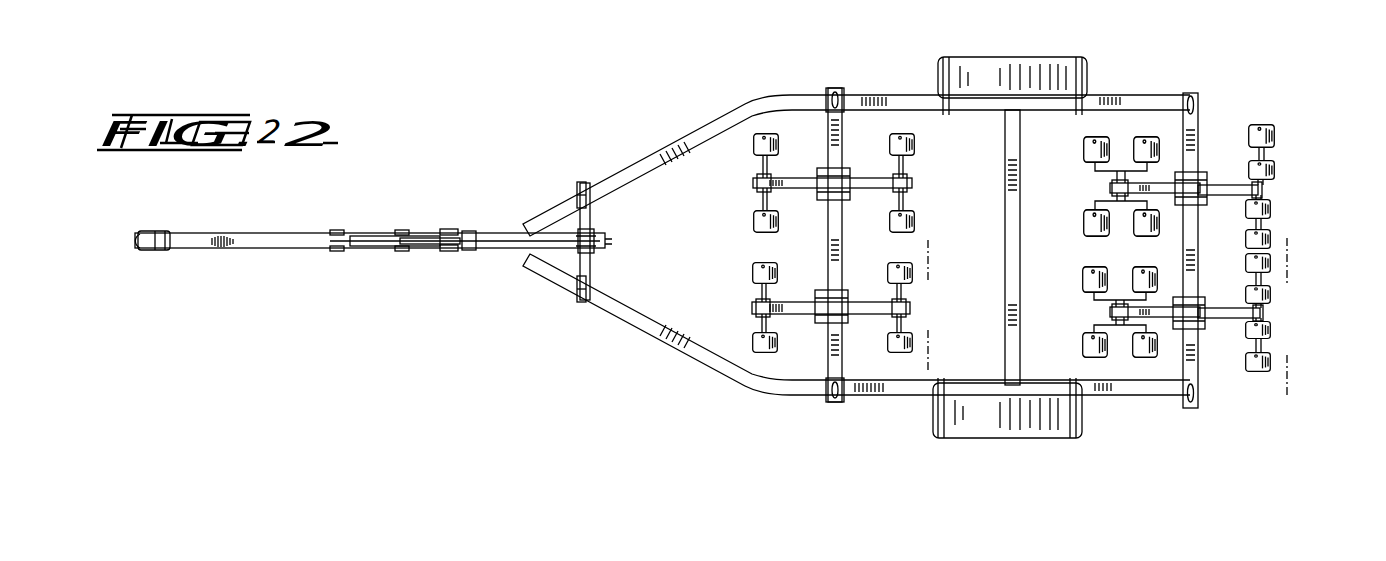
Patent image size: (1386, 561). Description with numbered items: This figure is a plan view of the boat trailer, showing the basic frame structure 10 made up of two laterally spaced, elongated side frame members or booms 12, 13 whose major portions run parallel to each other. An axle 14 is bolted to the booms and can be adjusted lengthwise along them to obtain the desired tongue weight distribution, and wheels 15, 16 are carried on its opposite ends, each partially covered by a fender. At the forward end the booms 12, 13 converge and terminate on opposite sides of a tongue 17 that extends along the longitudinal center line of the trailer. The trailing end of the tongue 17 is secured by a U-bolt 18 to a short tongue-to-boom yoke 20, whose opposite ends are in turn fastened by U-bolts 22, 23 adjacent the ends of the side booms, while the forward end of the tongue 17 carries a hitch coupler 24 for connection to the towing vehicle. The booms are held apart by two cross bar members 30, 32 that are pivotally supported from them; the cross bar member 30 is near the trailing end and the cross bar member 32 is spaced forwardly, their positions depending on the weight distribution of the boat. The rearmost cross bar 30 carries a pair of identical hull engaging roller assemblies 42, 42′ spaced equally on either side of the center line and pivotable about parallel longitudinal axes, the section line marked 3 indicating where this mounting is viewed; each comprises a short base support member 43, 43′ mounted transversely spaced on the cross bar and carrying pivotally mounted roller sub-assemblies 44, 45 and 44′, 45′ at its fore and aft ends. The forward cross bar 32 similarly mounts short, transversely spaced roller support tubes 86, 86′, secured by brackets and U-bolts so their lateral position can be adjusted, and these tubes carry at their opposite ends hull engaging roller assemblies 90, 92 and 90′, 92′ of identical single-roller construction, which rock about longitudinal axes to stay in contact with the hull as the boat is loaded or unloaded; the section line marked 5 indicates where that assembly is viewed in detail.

The basic frame structure 10 is at (856, 233).
The side frame member or boom 12 is at (886, 95).
The side frame member or boom 13 is at (851, 391).
The axle 14 is at (1013, 243).
The wheel 15 is at (1008, 75).
The wheel 16 is at (1012, 418).
The tongue 17 is at (295, 243).
The U-bolt 18 is at (592, 240).
The tongue-to-boom yoke 20 is at (588, 266).
The U-bolt 22 is at (577, 194).
The U-bolt 23 is at (577, 290).
The hitch coupler 24 is at (148, 249).
The cross bar member 30 is at (1190, 238).
The cross bar member 32 is at (843, 256).
The hull engaging roller assembly 42 is at (1240, 372).
The hull engaging roller assembly 42′ is at (1258, 118).
The base support member 43 is at (1226, 319).
The base support member 43′ is at (1230, 187).
The hull engaging roller sub-assembly 44 is at (1081, 337).
The hull engaging roller sub-assembly 44′ is at (1083, 150).
The hull engaging roller sub-assembly 45 is at (1272, 298).
The hull engaging roller sub-assembly 45′ is at (1276, 167).
The roller support tube 86 is at (838, 312).
The roller support tube 86′ is at (836, 180).
The hull engaging roller assembly 90 is at (737, 329).
The hull engaging roller assembly 90′ is at (752, 220).
The hull engaging roller assembly 92 is at (920, 328).
The hull engaging roller assembly 92′ is at (918, 212).
The section line 3- 3 is at (1272, 253).
The section line 5- 5 is at (905, 253).